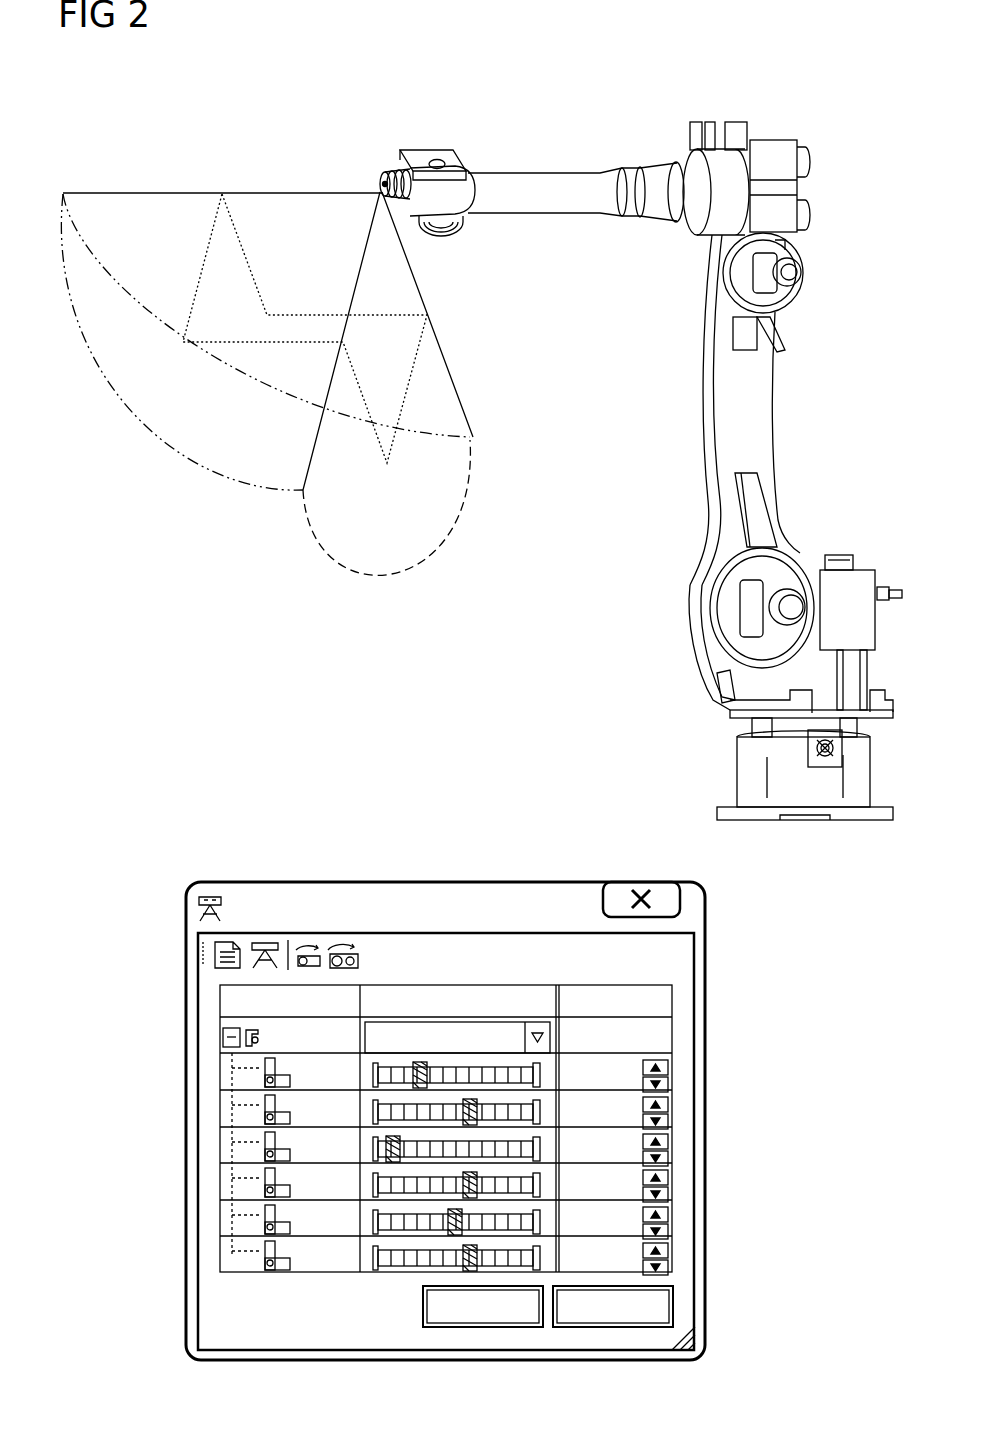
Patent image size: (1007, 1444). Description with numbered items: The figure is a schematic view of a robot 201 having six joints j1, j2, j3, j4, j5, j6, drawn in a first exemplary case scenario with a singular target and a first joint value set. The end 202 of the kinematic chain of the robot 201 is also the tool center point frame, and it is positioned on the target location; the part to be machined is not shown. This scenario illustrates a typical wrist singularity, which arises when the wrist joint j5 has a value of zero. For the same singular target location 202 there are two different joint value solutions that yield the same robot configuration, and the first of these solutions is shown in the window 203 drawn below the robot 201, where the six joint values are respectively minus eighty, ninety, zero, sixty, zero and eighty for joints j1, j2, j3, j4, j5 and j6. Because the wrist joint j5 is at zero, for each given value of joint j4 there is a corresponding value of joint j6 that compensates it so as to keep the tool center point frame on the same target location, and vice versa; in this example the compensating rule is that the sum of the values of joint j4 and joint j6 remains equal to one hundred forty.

The robot 201 is at (779, 59).
The end of the kinematic chain 202 is at (358, 187).
The window 203 is at (705, 1120).
The joint j1 is at (800, 750).
The joint j2 is at (793, 607).
The joint j3 is at (787, 272).
The joint j4 is at (690, 152).
The wrist joint j5 is at (435, 163).
The joint j6 is at (370, 185).